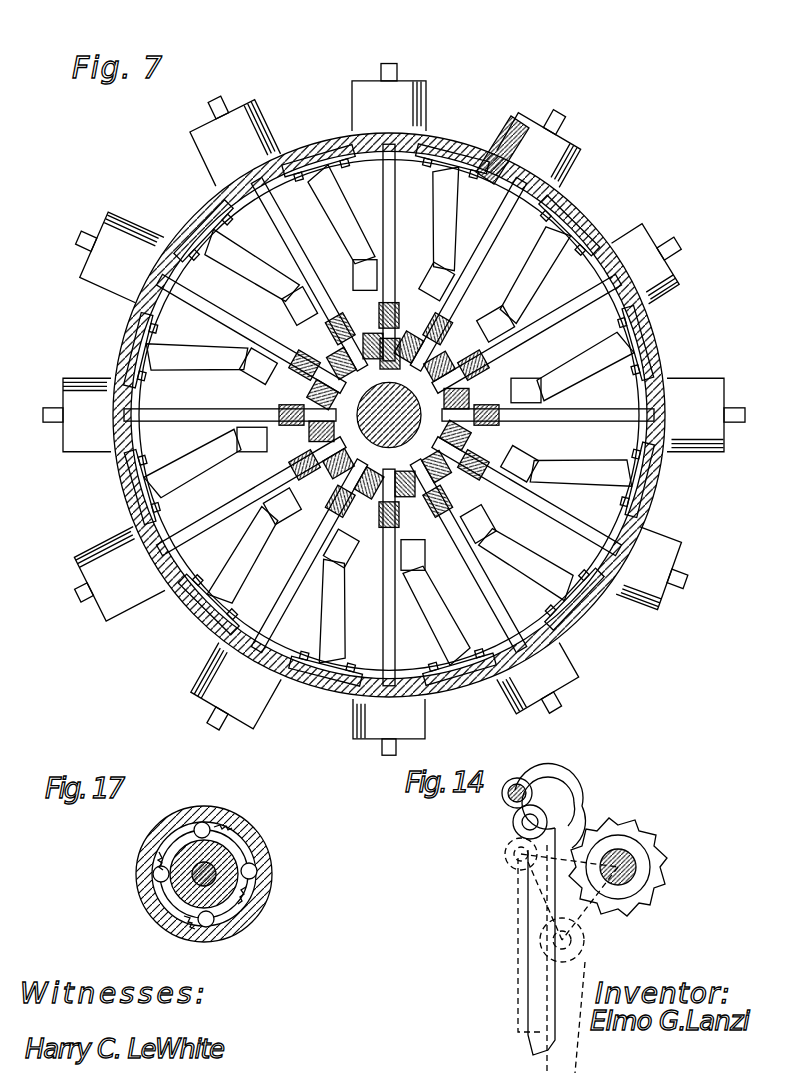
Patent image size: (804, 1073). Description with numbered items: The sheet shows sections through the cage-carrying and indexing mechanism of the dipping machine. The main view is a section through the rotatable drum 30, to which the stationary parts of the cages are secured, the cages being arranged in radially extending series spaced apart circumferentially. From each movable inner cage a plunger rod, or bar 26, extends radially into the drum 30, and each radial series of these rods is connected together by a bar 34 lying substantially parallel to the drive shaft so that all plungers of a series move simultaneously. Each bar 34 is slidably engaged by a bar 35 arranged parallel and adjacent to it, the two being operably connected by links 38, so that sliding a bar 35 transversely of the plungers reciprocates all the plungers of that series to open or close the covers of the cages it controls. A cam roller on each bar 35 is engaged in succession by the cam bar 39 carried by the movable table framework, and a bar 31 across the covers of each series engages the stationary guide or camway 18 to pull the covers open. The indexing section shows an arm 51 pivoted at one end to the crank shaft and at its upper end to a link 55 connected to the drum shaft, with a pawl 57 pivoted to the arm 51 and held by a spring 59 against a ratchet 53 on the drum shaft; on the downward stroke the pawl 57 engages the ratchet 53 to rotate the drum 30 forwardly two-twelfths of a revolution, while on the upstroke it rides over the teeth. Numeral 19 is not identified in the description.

In FIG. 7, the bar 26 is at (389, 66).
In FIG. 7, the rotatable drum 30 is at (659, 347).
In FIG. 7, the bar or rod 31 is at (408, 452).
In FIG. 7, the bar 34 is at (366, 406).
In FIG. 7, the bar 35 is at (432, 364).
In FIG. 7, the link 38 is at (492, 400).
In FIG. 17, the guide or camway 18 is at (246, 857).
In FIG. 17, the bearing housing 19 is at (259, 908).
In FIG. 14, the cam bar 39 is at (547, 945).
In FIG. 14, the arm 51 is at (528, 968).
In FIG. 14, the ratchet 53 is at (652, 856).
In FIG. 14, the link 55 is at (573, 845).
In FIG. 14, the pawl 57 is at (552, 797).
In FIG. 14, the spring 59 is at (538, 786).